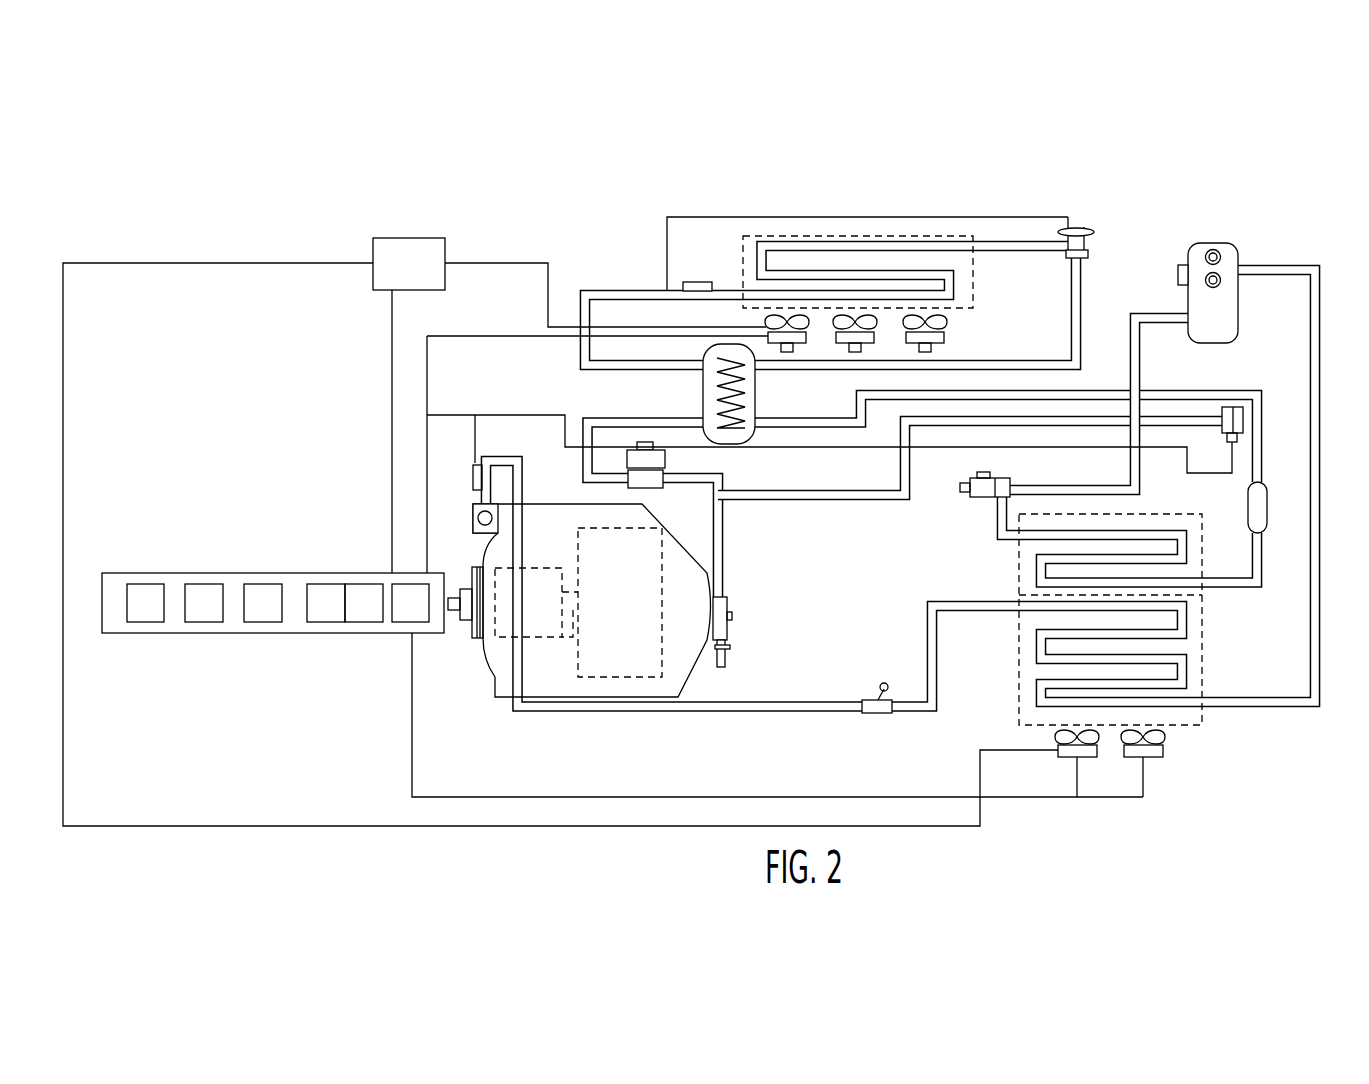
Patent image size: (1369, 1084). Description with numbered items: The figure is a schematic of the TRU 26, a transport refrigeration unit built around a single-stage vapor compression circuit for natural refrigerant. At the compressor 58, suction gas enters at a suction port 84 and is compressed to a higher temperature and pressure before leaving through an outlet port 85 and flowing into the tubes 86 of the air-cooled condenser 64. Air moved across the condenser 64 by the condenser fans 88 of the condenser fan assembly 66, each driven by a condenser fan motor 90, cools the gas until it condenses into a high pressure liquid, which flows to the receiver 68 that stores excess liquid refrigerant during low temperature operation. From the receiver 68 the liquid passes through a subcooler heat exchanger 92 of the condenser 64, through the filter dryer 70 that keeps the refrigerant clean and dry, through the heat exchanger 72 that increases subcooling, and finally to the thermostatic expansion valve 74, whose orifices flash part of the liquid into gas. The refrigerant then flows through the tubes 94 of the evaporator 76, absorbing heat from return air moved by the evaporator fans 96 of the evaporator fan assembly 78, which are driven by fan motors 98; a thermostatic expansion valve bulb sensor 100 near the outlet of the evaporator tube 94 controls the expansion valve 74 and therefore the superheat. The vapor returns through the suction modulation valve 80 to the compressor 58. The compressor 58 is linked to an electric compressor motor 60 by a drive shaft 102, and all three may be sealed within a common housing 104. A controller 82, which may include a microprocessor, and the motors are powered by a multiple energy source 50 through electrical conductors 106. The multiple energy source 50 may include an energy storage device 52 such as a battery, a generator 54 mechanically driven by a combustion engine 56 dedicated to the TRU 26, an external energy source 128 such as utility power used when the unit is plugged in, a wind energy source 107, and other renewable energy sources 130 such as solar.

The TRU 26 is at (1258, 146).
The multiple energy source 50 is at (362, 555).
The energy storage device 52 is at (400, 612).
The generator 54 is at (362, 610).
The combustion engine 56 is at (322, 610).
The compressor 58 is at (629, 618).
The electric compressor motor 60 is at (548, 618).
The condenser 64 is at (1236, 622).
The condenser fan assembly 66 is at (1103, 784).
The receiver 68 is at (1240, 300).
The filter dryer 70 is at (1268, 507).
The heat exchanger 72 is at (703, 383).
The thermostatic expansion valve 74 is at (1090, 240).
The evaporator 76 is at (973, 273).
The evaporator fan assembly 78 is at (1012, 340).
The suction modulation valve 80 is at (655, 488).
The controller 82 is at (409, 264).
The suction port 84 is at (728, 606).
The outlet port 85 is at (473, 515).
The tubes 86 is at (1190, 664).
The condenser fans 88 is at (1052, 737).
The condenser fan motors 90 is at (1068, 757).
The subcooler heat exchanger 92 is at (1019, 570).
The tubes 94 is at (743, 262).
The evaporator fans 96 is at (925, 315).
The fan motors 98 is at (920, 352).
The thermostatic expansion valve bulb sensor 100 is at (695, 282).
The drive shaft 102 is at (573, 643).
The housing 104 is at (605, 702).
The electrical conductors 106 is at (63, 363).
The wind energy source 107 is at (262, 622).
The external energy source 128 is at (145, 622).
The other renewable energy sources 130 is at (200, 584).